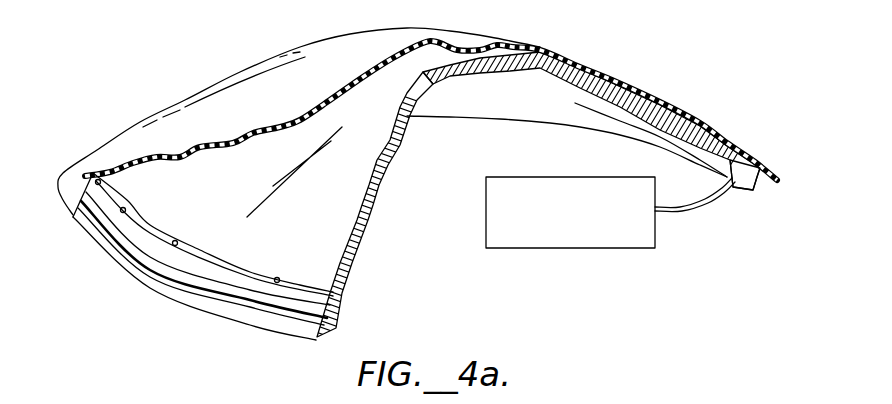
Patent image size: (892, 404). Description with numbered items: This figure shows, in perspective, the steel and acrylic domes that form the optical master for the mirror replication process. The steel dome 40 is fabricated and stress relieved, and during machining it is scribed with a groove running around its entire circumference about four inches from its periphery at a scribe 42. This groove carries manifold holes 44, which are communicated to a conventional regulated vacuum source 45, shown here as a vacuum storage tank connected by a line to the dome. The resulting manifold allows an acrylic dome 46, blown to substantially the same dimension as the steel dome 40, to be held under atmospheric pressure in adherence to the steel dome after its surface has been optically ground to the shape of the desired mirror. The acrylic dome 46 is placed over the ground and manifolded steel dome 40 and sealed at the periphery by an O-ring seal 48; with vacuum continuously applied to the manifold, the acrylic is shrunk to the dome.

The steel dome 40 is at (657, 108).
The scribe 42 is at (213, 263).
The manifold holes 44 is at (172, 244).
The regulated vacuum source 45 is at (590, 248).
The acrylic dome 46 is at (185, 107).
The O-ring seal 48 is at (248, 303).